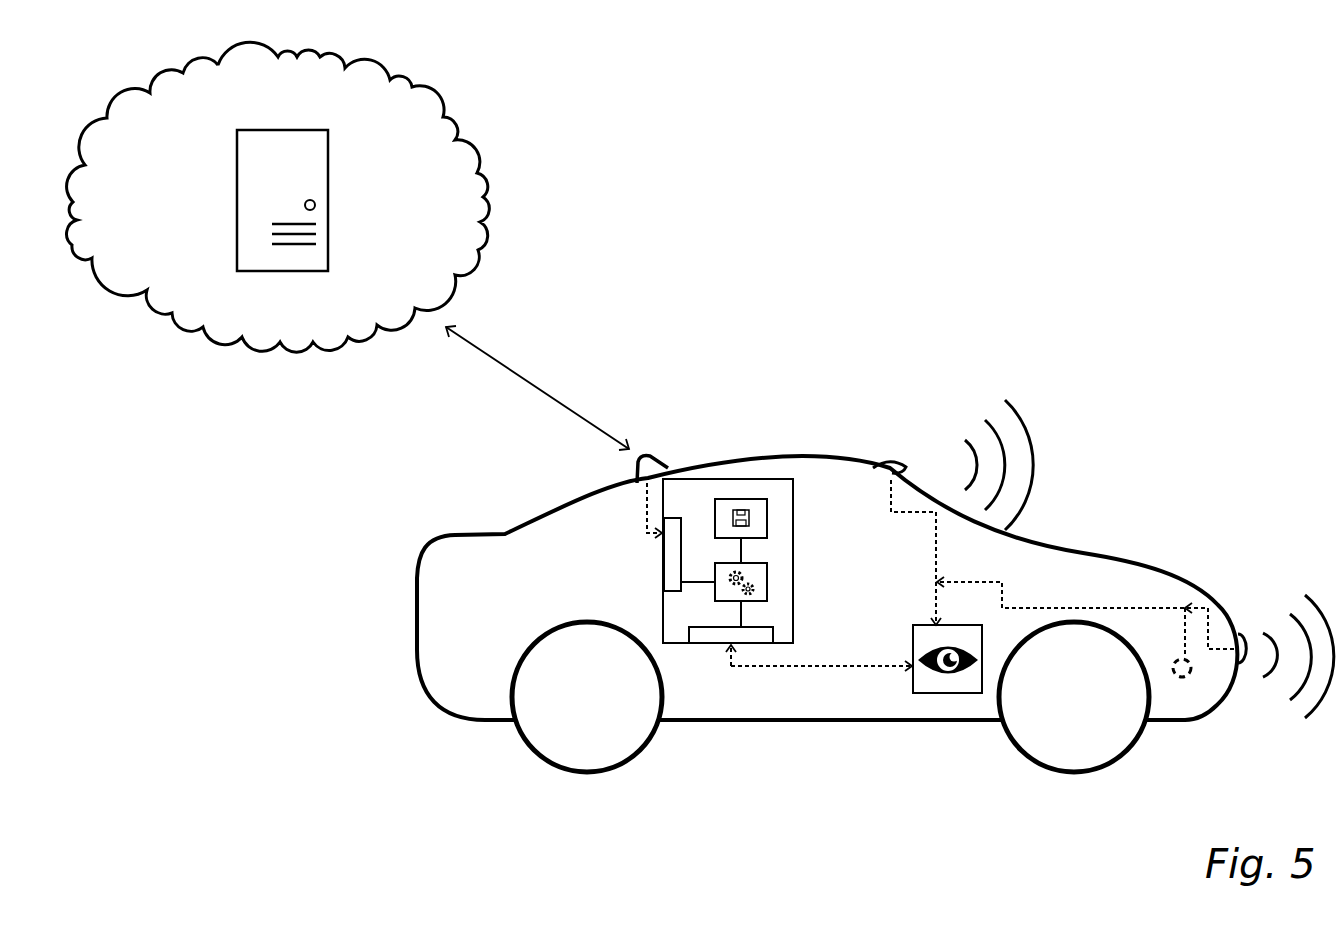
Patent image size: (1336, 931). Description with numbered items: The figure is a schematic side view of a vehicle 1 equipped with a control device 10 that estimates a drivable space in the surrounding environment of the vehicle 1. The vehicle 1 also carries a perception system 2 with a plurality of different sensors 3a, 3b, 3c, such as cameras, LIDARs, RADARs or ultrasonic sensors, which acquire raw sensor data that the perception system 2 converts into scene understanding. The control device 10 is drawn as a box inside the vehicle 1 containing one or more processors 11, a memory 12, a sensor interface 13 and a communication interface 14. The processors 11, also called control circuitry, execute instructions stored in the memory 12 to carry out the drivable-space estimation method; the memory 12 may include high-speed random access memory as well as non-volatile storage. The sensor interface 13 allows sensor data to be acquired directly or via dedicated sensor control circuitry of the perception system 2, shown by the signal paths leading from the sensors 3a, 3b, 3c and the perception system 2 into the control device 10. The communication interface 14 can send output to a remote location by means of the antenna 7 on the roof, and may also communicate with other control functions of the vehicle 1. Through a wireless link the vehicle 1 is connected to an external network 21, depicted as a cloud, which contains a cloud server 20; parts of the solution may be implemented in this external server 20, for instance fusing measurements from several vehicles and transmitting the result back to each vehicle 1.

The vehicle 1 is at (438, 718).
The perception system 2 is at (961, 694).
The sensor 3a is at (1187, 678).
The sensor 3b is at (1241, 636).
The sensor 3c is at (903, 462).
The antenna 7 is at (653, 450).
The control device 10 is at (718, 479).
The processor 11 is at (767, 585).
The memory 12 is at (741, 498).
The sensor interface 13 is at (713, 640).
The communication interface 14 is at (667, 567).
The cloud server 20 is at (269, 130).
The external network 21 is at (423, 84).